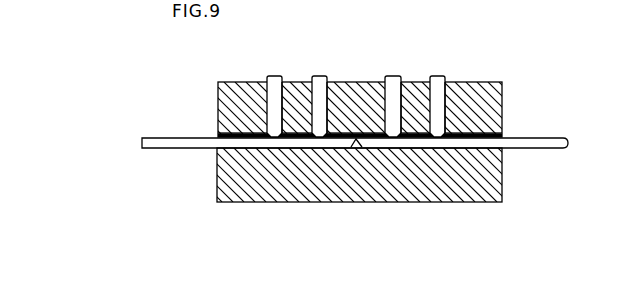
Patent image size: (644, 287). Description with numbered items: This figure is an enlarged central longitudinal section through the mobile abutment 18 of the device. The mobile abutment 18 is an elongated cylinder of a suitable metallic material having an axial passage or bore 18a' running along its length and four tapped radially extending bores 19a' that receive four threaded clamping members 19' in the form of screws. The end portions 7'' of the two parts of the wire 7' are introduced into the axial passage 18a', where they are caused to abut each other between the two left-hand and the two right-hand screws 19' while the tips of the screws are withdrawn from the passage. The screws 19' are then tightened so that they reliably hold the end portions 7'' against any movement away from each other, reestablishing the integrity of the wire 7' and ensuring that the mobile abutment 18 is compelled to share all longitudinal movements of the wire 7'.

The wire 7' is at (370, 113).
The end portions of the wire 7'' is at (360, 193).
The mobile abutment 18 is at (515, 75).
The axial passage or bore 18a' is at (391, 103).
The threaded clamping members 19' is at (386, 73).
The tapped radially extending bores 19a' is at (393, 90).